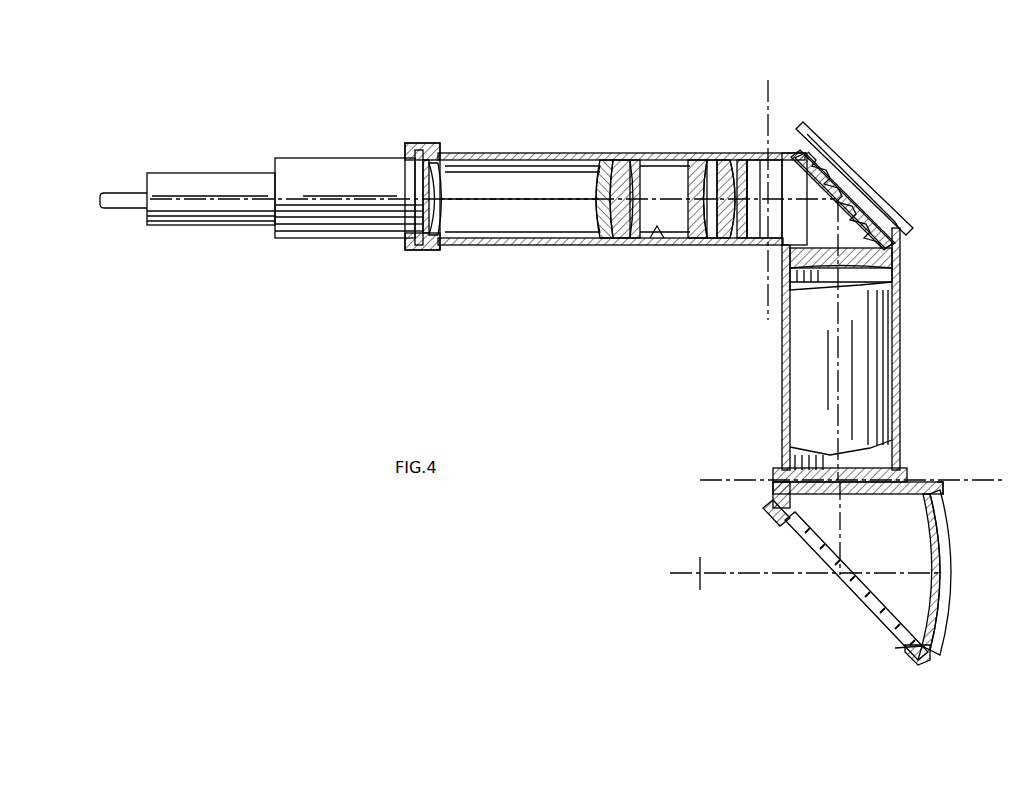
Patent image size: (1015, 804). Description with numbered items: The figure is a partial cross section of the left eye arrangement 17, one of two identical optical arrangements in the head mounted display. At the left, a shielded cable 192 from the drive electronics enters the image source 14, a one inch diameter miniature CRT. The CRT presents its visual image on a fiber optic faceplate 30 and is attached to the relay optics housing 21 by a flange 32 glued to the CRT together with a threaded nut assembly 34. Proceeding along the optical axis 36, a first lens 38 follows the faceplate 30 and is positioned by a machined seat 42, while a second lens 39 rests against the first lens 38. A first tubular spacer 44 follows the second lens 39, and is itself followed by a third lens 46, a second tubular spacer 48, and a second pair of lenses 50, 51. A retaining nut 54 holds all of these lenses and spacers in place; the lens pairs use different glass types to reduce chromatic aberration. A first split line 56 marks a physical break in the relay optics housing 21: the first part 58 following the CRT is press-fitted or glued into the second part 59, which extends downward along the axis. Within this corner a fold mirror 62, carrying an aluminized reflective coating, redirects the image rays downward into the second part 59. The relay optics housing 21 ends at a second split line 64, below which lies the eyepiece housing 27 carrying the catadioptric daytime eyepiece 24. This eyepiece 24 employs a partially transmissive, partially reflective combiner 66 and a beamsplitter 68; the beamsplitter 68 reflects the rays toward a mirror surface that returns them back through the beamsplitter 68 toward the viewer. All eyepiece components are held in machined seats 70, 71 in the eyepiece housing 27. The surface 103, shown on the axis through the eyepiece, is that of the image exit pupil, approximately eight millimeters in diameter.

The left eye arrangement 17 is at (262, 157).
The shielded cable 192 is at (130, 176).
The image source 14 is at (378, 162).
The threaded nut assembly 34 is at (411, 143).
The flange 32 is at (414, 190).
The fiber optic faceplate 30 is at (442, 213).
The relay optics housing 21 is at (528, 153).
The optical axis 36 is at (503, 199).
The machined seat 42 is at (605, 160).
The second lens 39 is at (628, 182).
The first lens 38 is at (598, 208).
The third lens 46 is at (688, 205).
The first tubular spacer 44 is at (657, 240).
The lens of second pair 50 is at (712, 160).
The lens of second pair 51 is at (729, 160).
The second tubular spacer 48 is at (716, 240).
The retaining nut 54 is at (752, 233).
The first split line 56 is at (768, 86).
The first part 58 is at (725, 77).
The second part 59 is at (885, 168).
The fold mirror 62 is at (820, 180).
The second split line 64 is at (944, 480).
The eyepiece 24 is at (708, 512).
The eyepiece housing 27 is at (772, 492).
The machined seat 70 is at (783, 522).
The image exit pupil surface 103 is at (801, 565).
The combiner 66 is at (951, 540).
The beamsplitter 68 is at (880, 620).
The machined seat 71 is at (930, 632).